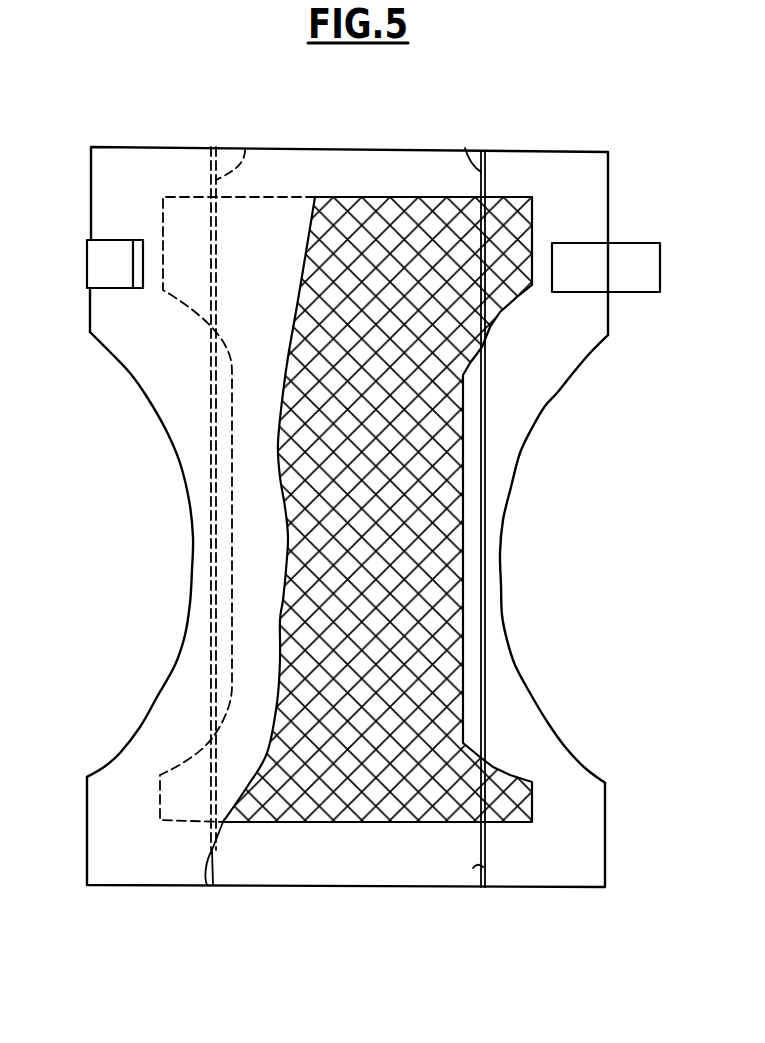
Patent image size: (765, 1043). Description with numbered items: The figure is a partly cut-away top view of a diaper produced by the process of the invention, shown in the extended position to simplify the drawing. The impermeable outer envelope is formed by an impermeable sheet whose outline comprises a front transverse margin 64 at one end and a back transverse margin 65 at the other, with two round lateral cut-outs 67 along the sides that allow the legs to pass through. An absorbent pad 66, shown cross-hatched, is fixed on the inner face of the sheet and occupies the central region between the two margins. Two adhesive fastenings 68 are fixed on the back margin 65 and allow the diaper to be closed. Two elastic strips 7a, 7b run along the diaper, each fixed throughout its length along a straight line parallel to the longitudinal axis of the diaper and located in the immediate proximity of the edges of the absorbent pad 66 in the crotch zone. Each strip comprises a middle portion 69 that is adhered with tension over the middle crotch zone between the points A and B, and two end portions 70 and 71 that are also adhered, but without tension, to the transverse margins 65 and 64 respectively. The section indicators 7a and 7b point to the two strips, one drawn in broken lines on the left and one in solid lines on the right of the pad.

The front transverse margin 64 is at (558, 863).
The back transverse margin 65 is at (552, 172).
The absorbent pad 66 is at (400, 493).
The round lateral cut-outs 67 is at (190, 605).
The adhesive fastenings 68 is at (107, 257).
The middle portion 69 is at (213, 553).
The end portion 70 is at (245, 150).
The end portion 71 is at (215, 862).
The elastic strip 7a is at (205, 534).
The elastic strip 7b is at (496, 542).
The point A is at (213, 353).
The point B is at (214, 715).